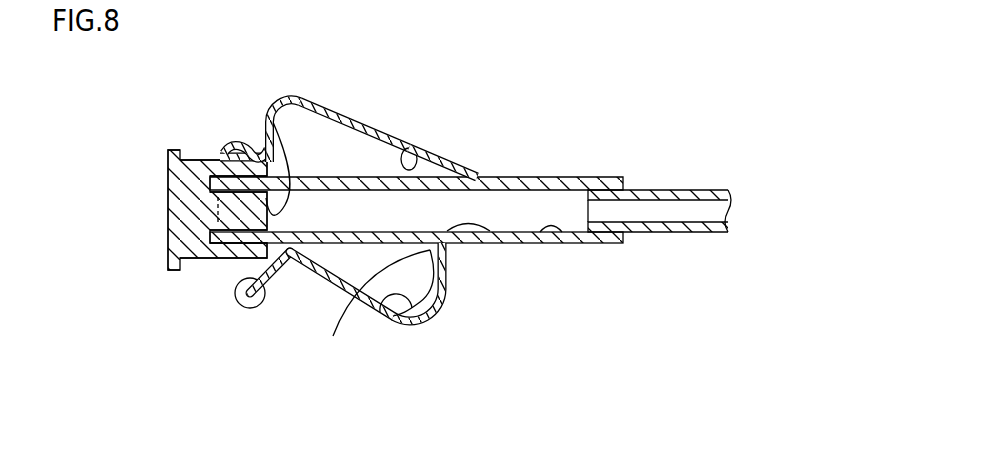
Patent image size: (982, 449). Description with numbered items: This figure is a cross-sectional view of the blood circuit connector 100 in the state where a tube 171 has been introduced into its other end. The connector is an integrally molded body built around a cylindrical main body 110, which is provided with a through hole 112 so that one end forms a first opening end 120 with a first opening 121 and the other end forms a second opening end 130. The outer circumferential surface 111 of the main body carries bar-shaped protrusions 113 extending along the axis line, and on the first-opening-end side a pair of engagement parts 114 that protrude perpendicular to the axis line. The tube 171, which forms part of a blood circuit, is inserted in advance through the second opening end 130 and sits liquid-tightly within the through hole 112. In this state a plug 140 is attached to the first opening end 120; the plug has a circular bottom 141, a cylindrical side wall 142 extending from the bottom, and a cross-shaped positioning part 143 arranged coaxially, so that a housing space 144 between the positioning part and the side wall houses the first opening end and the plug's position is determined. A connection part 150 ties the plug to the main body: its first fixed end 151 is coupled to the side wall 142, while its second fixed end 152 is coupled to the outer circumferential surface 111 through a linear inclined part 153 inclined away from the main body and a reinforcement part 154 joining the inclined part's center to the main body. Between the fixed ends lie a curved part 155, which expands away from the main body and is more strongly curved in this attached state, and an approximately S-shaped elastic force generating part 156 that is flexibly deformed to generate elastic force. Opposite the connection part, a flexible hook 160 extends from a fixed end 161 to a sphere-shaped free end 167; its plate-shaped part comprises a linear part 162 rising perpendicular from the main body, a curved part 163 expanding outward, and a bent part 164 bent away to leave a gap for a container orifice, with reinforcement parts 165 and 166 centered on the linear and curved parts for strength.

The blood circuit connector 100 is at (503, 100).
The main body 110 is at (552, 147).
The outer circumferential surface 111 is at (592, 177).
The through hole 112 is at (565, 243).
The bar-shaped protrusions 113 is at (510, 175).
The engagement parts 114 is at (218, 212).
The first opening end 120 is at (210, 238).
The first opening 121 is at (210, 193).
The second opening end 130 is at (623, 244).
The plug 140 is at (163, 229).
The bottom 141 is at (167, 151).
The side wall 142 is at (207, 161).
The positioning part 143 is at (273, 120).
The housing space 144 is at (208, 254).
The connection part 150 is at (355, 102).
The first fixed end 151 is at (212, 156).
The second fixed end 152 is at (473, 97).
The inclined part 153 is at (447, 157).
The reinforcement part 154 is at (412, 147).
The curved part 155 is at (298, 100).
The elastic force generating part 156 is at (252, 144).
The hook 160 is at (403, 345).
The fixed end 161 is at (470, 228).
The linear part 162 is at (447, 272).
The curved part 163 is at (423, 321).
The bent part 164 is at (291, 258).
The reinforcement part 165 is at (345, 300).
The reinforcement part 166 is at (380, 311).
The free end 167 is at (238, 307).
The tube 171 is at (702, 190).